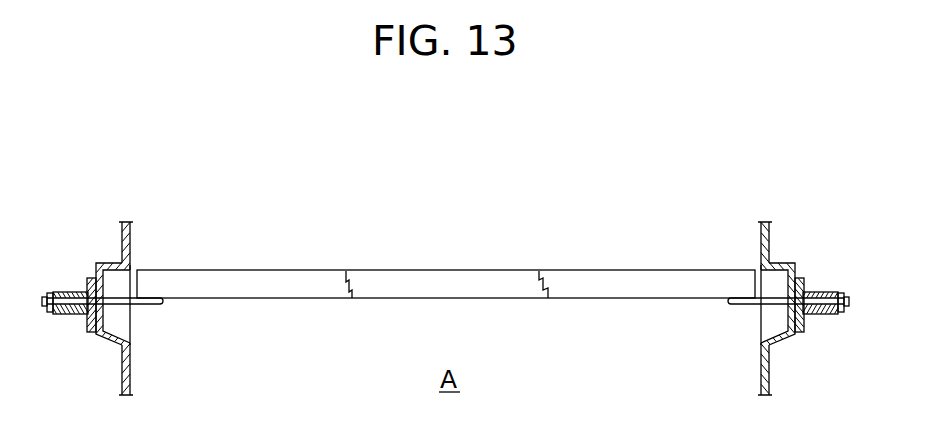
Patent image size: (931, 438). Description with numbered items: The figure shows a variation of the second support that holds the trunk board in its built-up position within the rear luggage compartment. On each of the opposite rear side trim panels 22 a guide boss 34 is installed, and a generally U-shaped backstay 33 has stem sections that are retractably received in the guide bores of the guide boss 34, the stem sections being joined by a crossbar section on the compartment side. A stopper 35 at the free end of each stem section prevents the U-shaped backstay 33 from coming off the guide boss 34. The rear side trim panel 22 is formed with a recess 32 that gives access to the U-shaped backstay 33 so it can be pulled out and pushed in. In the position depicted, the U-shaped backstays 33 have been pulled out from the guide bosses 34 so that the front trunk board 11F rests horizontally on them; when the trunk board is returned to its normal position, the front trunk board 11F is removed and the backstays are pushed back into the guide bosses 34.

The front trunk board 11F is at (444, 270).
The rear side trim panel 22 is at (132, 238).
The recess 32 is at (131, 332).
The U-shaped backstay 33 is at (154, 306).
The guide boss 34 is at (78, 287).
The stopper 35 is at (45, 312).